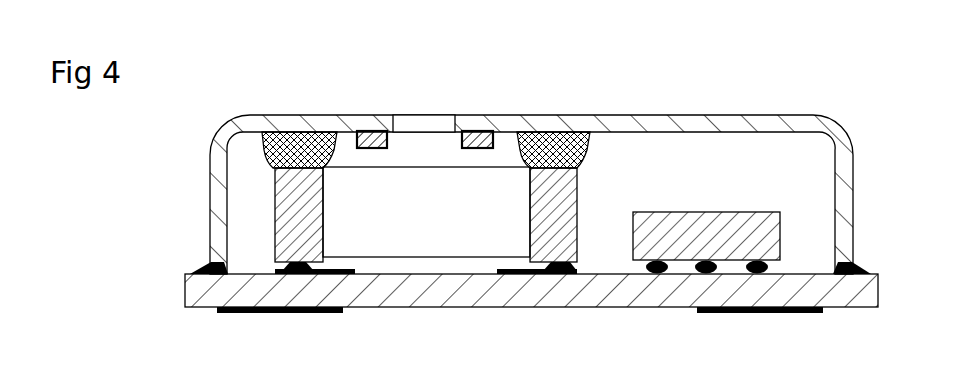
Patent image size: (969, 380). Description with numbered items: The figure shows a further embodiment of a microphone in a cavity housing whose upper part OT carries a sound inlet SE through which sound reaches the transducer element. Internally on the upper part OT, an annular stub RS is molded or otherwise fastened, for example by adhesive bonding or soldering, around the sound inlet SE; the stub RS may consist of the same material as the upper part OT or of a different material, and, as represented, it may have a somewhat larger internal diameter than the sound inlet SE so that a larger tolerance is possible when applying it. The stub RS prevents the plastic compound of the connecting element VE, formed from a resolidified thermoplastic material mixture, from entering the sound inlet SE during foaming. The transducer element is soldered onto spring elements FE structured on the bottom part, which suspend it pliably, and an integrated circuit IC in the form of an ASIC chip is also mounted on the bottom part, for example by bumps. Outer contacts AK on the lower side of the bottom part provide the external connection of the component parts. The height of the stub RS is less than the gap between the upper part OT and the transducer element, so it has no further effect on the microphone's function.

The upper part OT is at (703, 117).
The sound inlet SE is at (411, 118).
The annular stub RS is at (483, 131).
The connecting element VE is at (305, 148).
The integrated circuit IC is at (692, 235).
The spring elements FE is at (528, 269).
The outer contacts AK is at (298, 313).